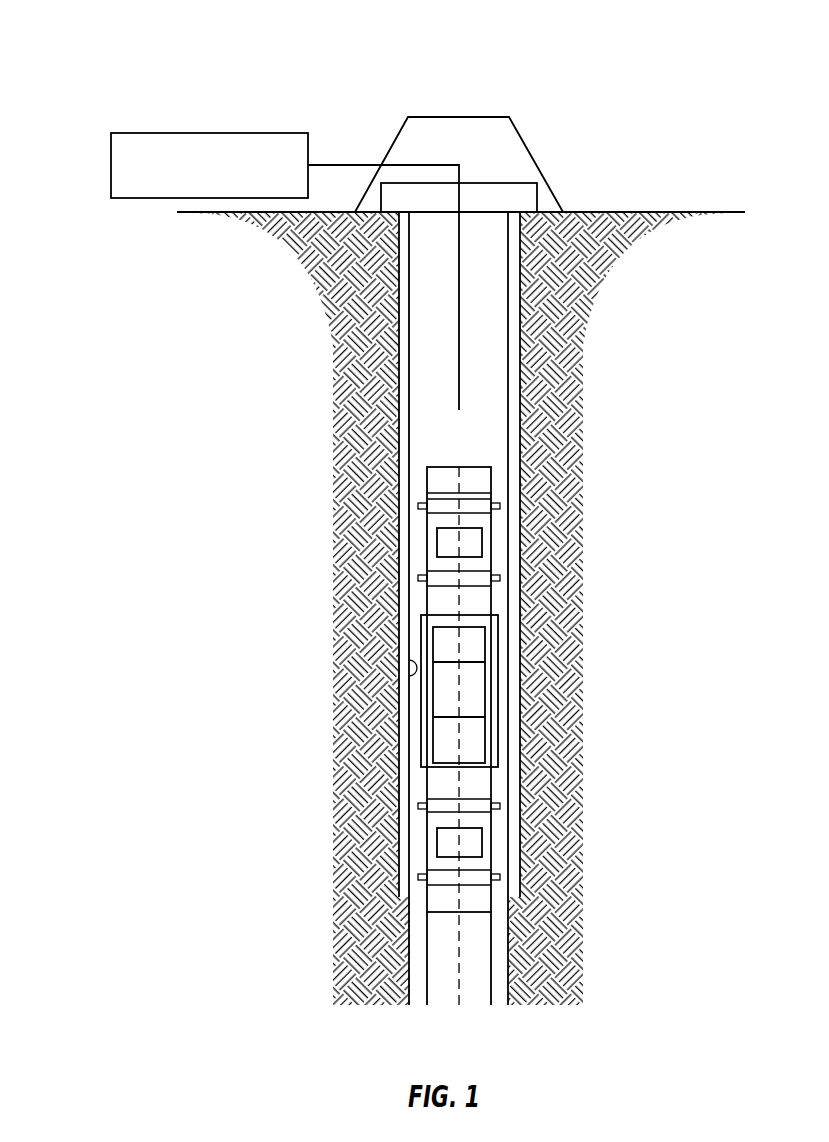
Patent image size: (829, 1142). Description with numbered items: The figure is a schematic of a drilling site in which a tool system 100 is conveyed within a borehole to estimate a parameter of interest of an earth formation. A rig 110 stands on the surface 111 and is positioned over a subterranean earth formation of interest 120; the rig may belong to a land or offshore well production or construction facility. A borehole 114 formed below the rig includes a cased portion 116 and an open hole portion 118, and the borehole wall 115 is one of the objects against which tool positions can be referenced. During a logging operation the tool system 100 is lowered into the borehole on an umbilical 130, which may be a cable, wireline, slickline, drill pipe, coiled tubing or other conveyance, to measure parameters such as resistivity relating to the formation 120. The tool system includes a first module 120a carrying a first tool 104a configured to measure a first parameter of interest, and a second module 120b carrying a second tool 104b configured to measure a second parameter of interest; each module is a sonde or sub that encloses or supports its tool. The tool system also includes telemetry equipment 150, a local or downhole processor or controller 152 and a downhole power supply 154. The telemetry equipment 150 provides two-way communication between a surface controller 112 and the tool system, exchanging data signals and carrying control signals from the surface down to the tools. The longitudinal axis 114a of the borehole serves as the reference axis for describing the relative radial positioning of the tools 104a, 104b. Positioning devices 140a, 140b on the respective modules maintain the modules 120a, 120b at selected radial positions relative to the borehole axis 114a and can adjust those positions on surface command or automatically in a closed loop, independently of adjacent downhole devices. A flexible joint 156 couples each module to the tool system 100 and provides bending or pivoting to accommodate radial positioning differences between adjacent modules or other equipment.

The tool system 100 is at (174, 42).
The rig 110 is at (538, 132).
The surface 111 is at (686, 211).
The surface controller 112 is at (168, 132).
The borehole 114 is at (425, 612).
The longitudinal axis of the borehole 114a is at (435, 972).
The borehole wall 115 is at (408, 668).
The cased portion 116 is at (522, 333).
The open hole portion 118 is at (512, 943).
The earth formation of interest 120 is at (121, 655).
The first module 120a is at (500, 537).
The second module 120b is at (500, 840).
The umbilical 130 is at (462, 410).
The positioning device 140a is at (418, 505).
The positioning device 140b is at (418, 805).
The first tool 104a is at (437, 542).
The second tool 104b is at (437, 842).
The telemetry equipment 150 is at (478, 645).
The downhole processor 152 is at (478, 688).
The downhole power supply 154 is at (478, 738).
The flexible joint 156 is at (480, 602).